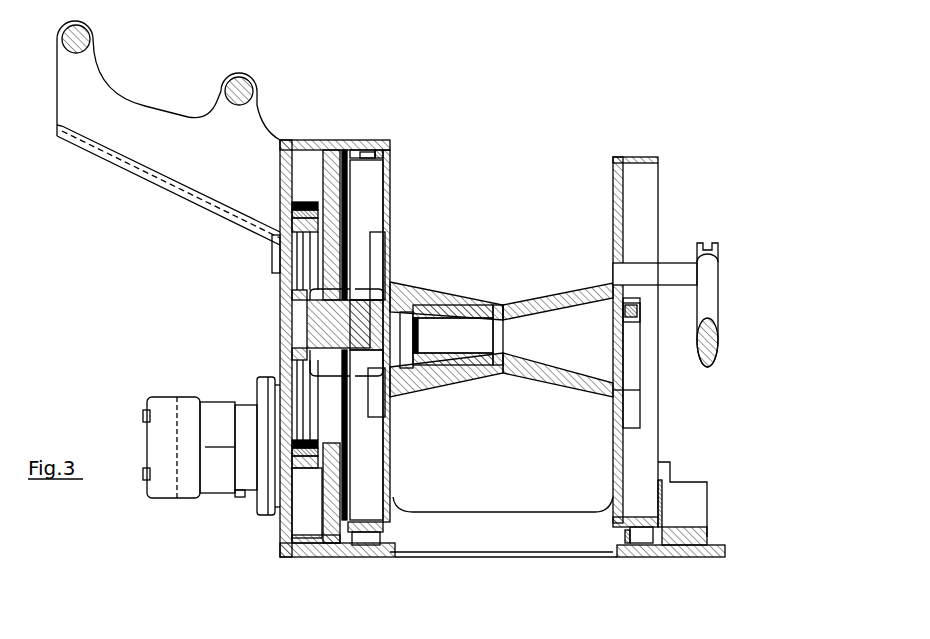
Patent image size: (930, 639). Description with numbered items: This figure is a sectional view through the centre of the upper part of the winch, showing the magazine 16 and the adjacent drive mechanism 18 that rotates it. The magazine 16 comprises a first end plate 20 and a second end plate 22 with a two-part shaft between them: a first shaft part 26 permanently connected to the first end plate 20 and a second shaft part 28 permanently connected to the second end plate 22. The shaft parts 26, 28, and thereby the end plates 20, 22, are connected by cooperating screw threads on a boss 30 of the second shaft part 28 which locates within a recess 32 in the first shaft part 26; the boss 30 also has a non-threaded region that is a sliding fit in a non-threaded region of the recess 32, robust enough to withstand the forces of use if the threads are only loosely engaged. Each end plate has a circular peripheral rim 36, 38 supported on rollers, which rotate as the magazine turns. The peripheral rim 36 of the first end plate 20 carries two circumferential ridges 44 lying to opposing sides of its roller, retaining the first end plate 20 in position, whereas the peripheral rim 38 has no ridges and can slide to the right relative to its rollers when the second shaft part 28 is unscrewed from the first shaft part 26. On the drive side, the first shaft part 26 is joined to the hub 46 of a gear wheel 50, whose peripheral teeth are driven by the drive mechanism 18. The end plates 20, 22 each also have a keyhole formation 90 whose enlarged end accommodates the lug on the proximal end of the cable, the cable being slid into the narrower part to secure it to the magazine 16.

The magazine 16 is at (598, 115).
The drive mechanism 18 is at (171, 516).
The first end plate 20 is at (392, 165).
The second end plate 22 is at (614, 210).
The first shaft part 26 is at (443, 298).
The second shaft part 28 is at (558, 295).
The boss 30 is at (457, 357).
The recess 32 is at (402, 362).
The peripheral rim 36 is at (358, 158).
The peripheral rim 38 is at (637, 158).
The circumferential ridges 44 is at (378, 148).
The hub 46 is at (338, 326).
The gear wheel 50 is at (300, 302).
The keyhole formation 90 is at (638, 307).